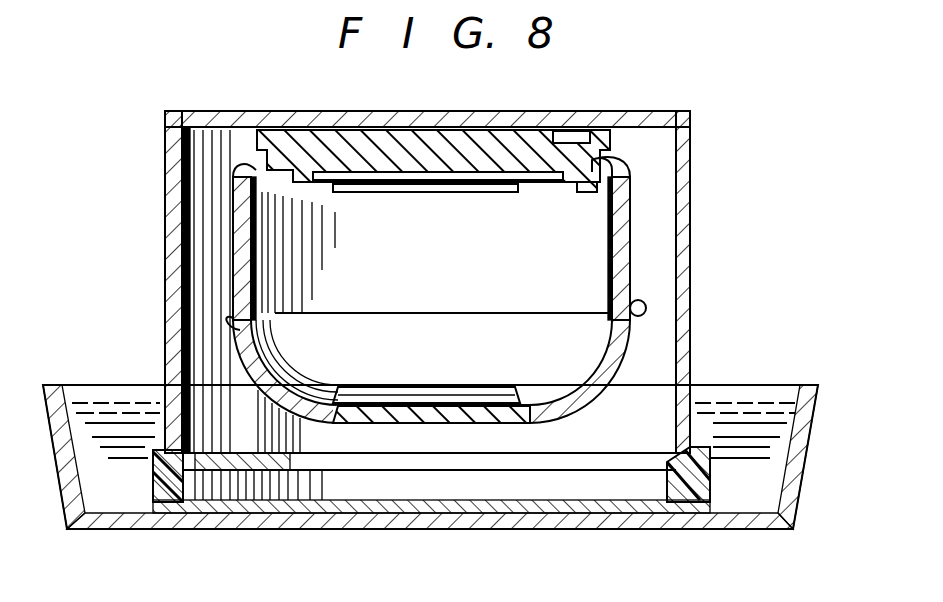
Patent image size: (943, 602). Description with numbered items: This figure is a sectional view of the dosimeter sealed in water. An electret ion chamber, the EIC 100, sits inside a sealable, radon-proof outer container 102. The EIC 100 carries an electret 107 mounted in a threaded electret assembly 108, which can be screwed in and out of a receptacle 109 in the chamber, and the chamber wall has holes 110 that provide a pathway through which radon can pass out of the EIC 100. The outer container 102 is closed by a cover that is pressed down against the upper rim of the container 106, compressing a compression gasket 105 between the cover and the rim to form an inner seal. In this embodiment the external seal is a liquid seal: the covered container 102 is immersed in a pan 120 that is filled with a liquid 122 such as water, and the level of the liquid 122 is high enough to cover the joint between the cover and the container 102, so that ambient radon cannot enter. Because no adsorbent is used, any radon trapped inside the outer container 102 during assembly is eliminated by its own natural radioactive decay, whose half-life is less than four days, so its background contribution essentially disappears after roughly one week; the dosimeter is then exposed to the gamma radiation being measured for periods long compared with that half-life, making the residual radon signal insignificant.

The EIC 100 is at (632, 225).
The outer container 102 is at (690, 290).
The compression gasket 105 is at (667, 487).
The upper rim of the container 106 is at (708, 462).
The electret 107 is at (480, 192).
The threaded electret assembly 108 is at (398, 182).
The receptacle 109 is at (430, 129).
The holes 110 is at (490, 423).
The pan 120 is at (728, 529).
The liquid 122 is at (745, 400).